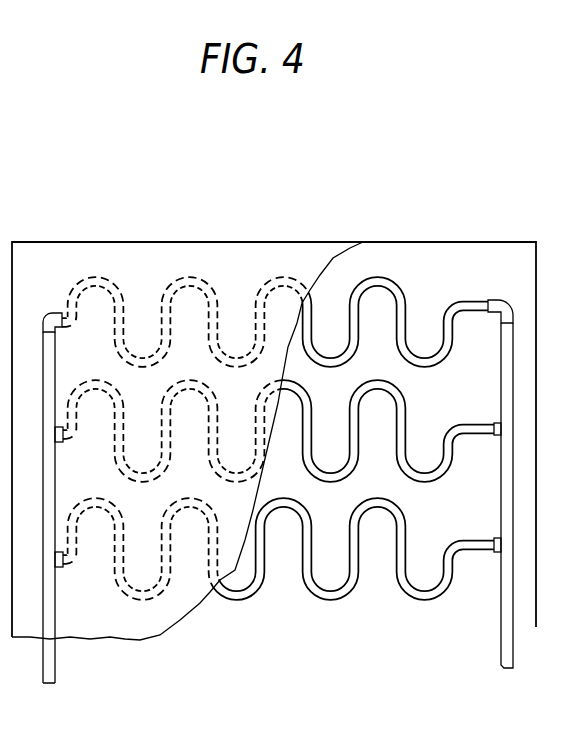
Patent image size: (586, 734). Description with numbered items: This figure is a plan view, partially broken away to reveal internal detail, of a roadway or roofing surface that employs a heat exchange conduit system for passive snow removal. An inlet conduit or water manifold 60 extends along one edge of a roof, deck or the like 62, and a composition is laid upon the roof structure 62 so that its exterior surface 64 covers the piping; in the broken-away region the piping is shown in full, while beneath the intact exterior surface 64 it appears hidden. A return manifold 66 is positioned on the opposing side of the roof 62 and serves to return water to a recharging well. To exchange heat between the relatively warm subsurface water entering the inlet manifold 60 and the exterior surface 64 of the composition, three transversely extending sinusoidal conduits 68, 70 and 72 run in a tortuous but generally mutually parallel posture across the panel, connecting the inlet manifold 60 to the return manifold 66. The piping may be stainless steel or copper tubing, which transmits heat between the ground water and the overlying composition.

The inlet conduit or water manifold 60 is at (503, 385).
The roof, deck or the like 62 is at (498, 257).
The exterior surface of the composition 64 is at (68, 260).
The return manifold 66 is at (58, 657).
The sinusoidal conduit 68 is at (382, 277).
The sinusoidal conduit 70 is at (436, 481).
The sinusoidal conduit 72 is at (436, 601).